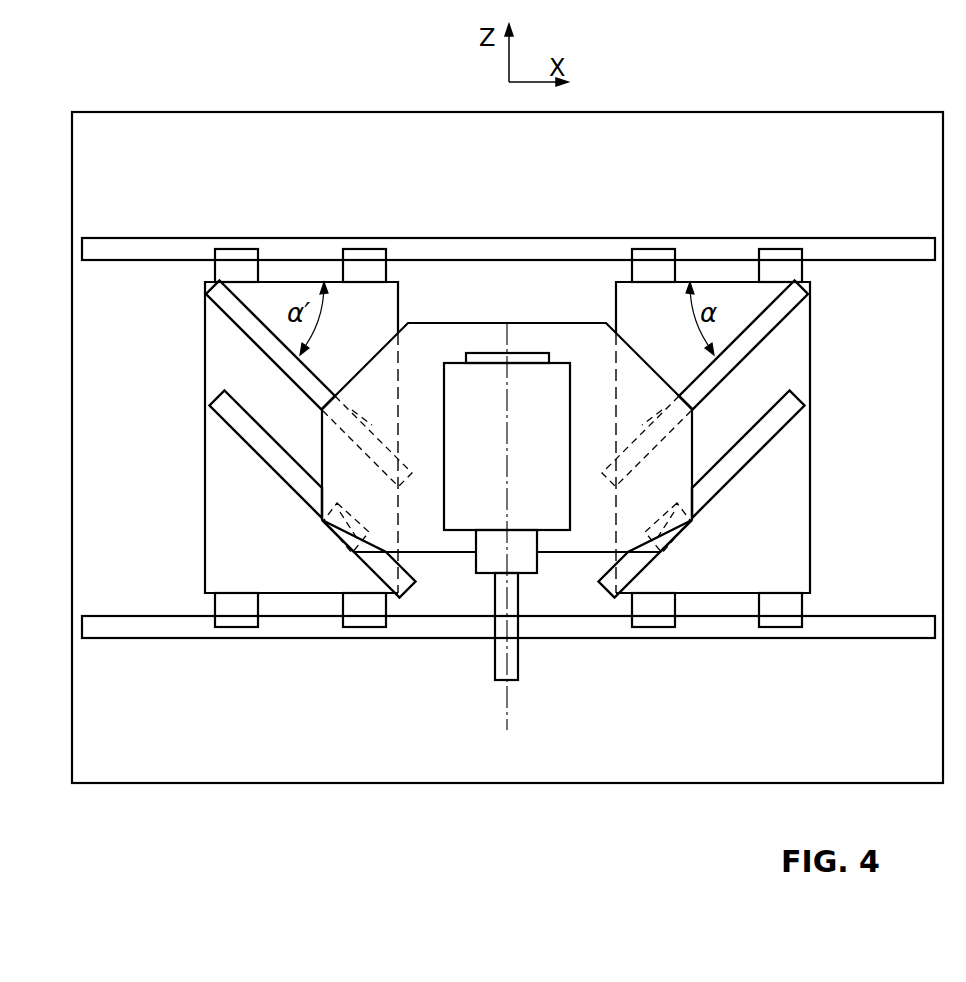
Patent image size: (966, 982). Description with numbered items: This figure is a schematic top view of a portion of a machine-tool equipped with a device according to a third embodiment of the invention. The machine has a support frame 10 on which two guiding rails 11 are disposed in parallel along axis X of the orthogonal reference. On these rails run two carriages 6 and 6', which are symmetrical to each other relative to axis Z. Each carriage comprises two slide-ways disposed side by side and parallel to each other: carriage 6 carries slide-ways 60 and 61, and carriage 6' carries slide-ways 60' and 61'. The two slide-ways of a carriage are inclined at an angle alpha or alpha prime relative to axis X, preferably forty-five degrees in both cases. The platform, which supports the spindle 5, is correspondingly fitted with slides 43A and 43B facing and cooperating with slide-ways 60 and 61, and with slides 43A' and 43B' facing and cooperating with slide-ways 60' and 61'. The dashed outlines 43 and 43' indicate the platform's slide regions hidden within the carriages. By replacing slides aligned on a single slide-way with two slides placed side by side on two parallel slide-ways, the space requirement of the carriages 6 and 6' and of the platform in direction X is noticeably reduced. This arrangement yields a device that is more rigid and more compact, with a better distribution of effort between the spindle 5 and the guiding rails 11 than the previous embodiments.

The support frame 10 is at (737, 742).
The guiding rails 11 is at (872, 248).
The spindle 5 is at (481, 469).
The carriage 6 is at (746, 438).
The carriage 6' is at (257, 438).
The slide-way 61 is at (743, 295).
The slide-way 61' is at (230, 295).
The slide 43B is at (782, 362).
The slide 43B' is at (217, 363).
The slide 43A is at (780, 472).
The slide 43A' is at (209, 495).
The beam path (right) 43 is at (647, 474).
The beam path (left) 43' is at (367, 474).
The slide-way 60 is at (657, 559).
The slide-way 60' is at (354, 559).